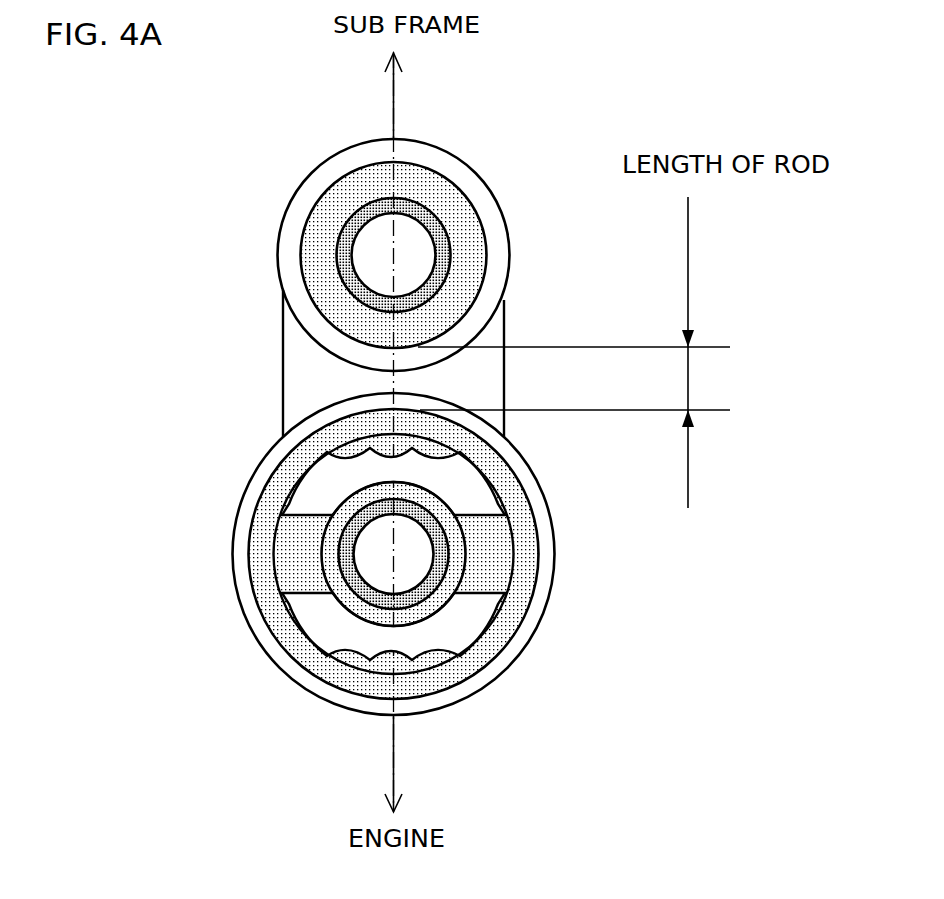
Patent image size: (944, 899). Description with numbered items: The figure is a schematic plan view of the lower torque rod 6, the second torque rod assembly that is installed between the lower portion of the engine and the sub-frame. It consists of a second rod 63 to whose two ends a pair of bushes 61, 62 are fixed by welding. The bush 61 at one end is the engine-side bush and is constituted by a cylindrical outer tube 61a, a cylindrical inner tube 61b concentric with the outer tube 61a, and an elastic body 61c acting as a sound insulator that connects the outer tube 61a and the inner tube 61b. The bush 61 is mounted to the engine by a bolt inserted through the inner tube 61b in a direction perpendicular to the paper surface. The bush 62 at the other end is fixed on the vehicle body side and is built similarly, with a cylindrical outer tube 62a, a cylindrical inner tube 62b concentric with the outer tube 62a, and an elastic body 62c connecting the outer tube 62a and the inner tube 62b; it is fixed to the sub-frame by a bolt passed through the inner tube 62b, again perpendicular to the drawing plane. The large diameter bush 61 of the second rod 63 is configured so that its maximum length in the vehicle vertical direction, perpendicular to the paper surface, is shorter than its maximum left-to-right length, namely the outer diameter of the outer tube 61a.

The lower torque rod 6 is at (562, 122).
The bush 61 is at (140, 456).
The cylindrical outer tube 61a is at (247, 500).
The cylindrical inner tube 61b is at (340, 583).
The elastic body 61c is at (293, 545).
The bush 62 is at (180, 158).
The cylindrical outer tube 62a is at (300, 205).
The cylindrical inner tube 62b is at (343, 297).
The elastic body 62c is at (318, 257).
The second rod 63 is at (310, 380).